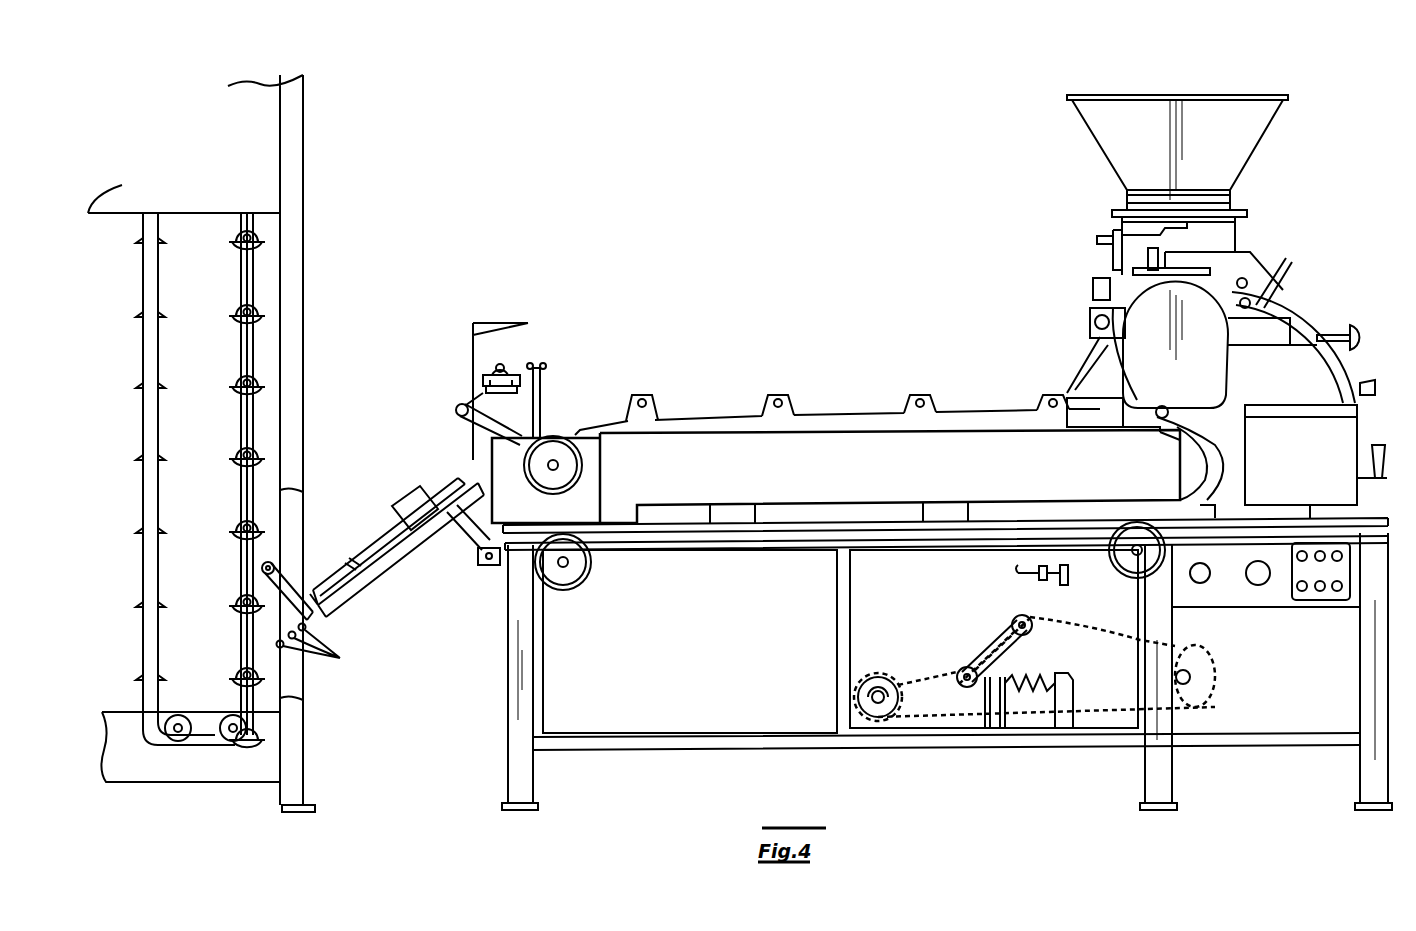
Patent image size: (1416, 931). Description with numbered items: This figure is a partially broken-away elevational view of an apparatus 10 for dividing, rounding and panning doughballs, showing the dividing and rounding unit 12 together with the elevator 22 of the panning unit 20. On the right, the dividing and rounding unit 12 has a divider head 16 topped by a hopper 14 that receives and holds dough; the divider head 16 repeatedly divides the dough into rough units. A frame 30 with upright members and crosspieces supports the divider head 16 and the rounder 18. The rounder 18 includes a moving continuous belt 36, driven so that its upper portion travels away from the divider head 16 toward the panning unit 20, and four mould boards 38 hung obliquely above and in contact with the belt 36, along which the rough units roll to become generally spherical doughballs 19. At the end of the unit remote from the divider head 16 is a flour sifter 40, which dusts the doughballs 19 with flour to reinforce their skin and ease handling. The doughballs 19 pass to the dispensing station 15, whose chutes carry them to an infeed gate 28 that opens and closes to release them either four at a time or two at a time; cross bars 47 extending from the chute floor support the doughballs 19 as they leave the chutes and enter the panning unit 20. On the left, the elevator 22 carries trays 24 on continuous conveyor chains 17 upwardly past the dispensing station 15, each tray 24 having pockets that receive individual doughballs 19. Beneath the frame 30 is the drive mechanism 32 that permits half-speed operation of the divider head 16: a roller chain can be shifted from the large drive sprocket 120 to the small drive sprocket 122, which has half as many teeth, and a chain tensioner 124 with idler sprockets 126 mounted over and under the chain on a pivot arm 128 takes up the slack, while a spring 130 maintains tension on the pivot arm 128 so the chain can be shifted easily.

The apparatus 10 is at (677, 207).
The dividing and rounding unit 12 is at (1130, 306).
The hopper 14 is at (1237, 155).
The dispensing station 15 is at (405, 544).
The divider head 16 is at (1337, 302).
The continuous conveyor chains 17 is at (243, 552).
The rounder 18 is at (818, 405).
The doughballs 19 is at (318, 603).
The panning unit 20 is at (323, 148).
The elevator 22 is at (221, 443).
The trays 24 is at (237, 318).
The infeed gate 28 is at (296, 587).
The frame 30 is at (1367, 614).
The drive mechanism 32 is at (992, 646).
The continuous belt 36 is at (565, 432).
The mould boards 38 is at (832, 418).
The flour sifter 40 is at (537, 352).
The cross bars 47 is at (319, 652).
The large drive sprocket 120 is at (858, 697).
The small drive sprocket 122 is at (880, 690).
The chain tensioner 124 is at (975, 645).
The idler sprockets 126 is at (1030, 617).
The pivot arm 128 is at (1005, 647).
The spring 130 is at (1045, 682).